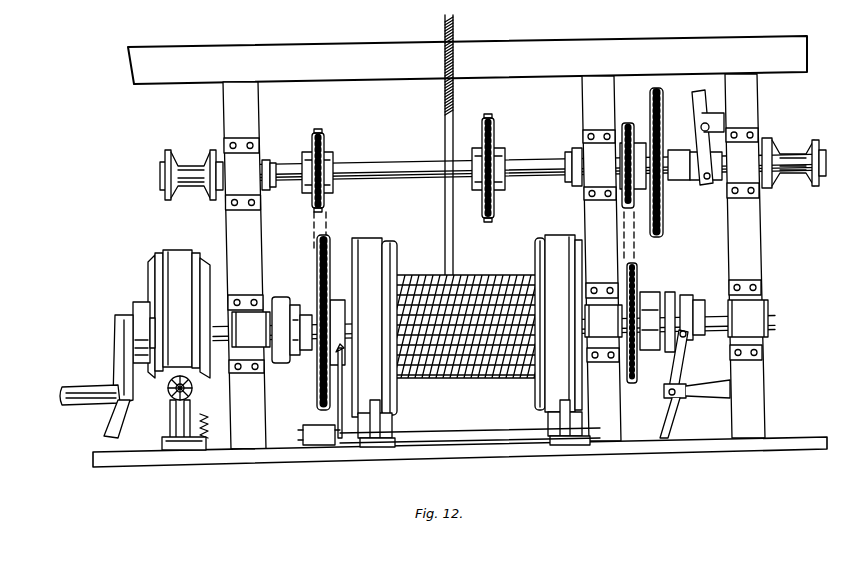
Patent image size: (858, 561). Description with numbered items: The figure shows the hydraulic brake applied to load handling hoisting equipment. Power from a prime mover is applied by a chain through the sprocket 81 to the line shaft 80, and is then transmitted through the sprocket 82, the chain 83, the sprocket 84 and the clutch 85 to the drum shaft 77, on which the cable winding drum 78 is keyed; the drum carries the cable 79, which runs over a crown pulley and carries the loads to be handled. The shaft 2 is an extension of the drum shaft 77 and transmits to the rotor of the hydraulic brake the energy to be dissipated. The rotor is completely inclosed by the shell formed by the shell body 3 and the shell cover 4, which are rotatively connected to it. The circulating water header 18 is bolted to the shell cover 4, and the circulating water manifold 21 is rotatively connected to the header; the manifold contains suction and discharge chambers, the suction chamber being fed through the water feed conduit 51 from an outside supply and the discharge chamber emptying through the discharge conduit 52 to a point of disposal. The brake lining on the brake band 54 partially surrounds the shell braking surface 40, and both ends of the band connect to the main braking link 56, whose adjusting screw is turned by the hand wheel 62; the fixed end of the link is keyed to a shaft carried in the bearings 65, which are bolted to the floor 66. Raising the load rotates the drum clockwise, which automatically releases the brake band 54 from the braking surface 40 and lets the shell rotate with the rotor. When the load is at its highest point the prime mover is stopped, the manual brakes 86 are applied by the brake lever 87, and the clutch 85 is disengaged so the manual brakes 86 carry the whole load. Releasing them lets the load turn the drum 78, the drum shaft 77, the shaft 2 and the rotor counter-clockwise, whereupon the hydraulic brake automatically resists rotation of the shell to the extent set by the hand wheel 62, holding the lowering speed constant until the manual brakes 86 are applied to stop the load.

The shaft 2 is at (220, 322).
The shell body 3 is at (203, 260).
The shell cover 4 is at (153, 273).
The circulating water header 18 is at (138, 303).
The circulating water manifold 21 is at (116, 358).
The shell braking surface 40 is at (194, 253).
The water feed conduit 51 is at (76, 390).
The discharge conduit 52 is at (112, 422).
The brake band 54 is at (172, 253).
The main braking link 56 is at (195, 422).
The hand wheel 62 is at (198, 394).
The bearings 65 is at (165, 443).
The floor 66 is at (100, 452).
The drum shaft 77 is at (775, 306).
The cable winding drum 78 is at (394, 275).
The cable 79 is at (455, 276).
The line shaft 80 is at (520, 151).
The sprocket 81 is at (498, 130).
The sprocket 82 is at (328, 146).
The chain 83 is at (330, 226).
The sprocket 84 is at (328, 258).
The clutch 85 is at (295, 298).
The manual brakes 86 is at (376, 239).
The brake lever 87 is at (338, 376).